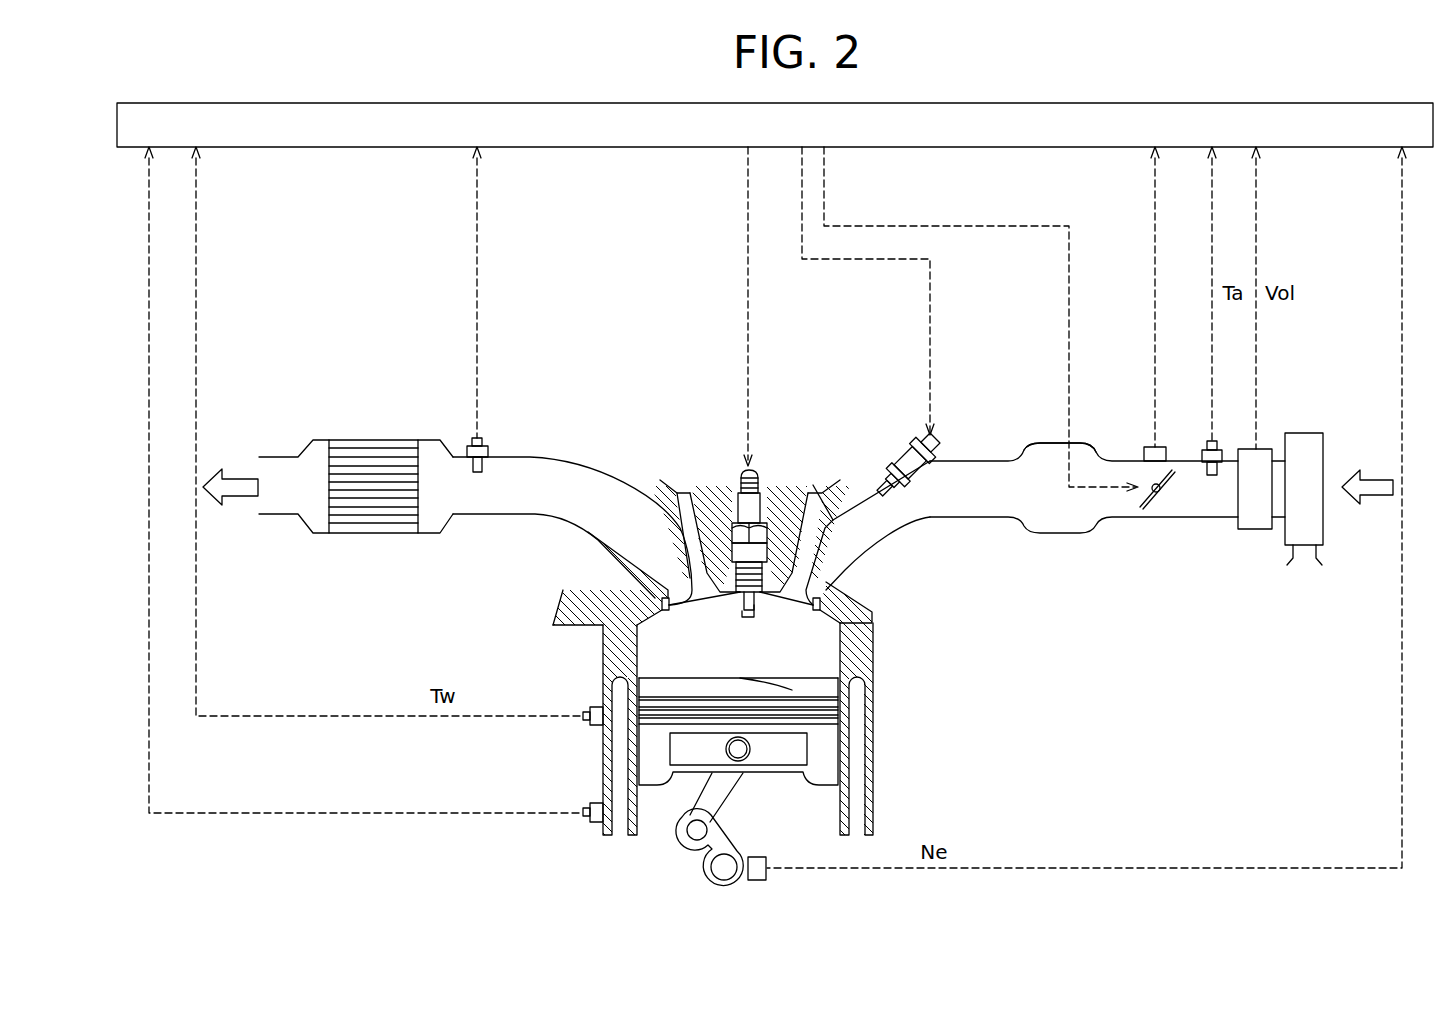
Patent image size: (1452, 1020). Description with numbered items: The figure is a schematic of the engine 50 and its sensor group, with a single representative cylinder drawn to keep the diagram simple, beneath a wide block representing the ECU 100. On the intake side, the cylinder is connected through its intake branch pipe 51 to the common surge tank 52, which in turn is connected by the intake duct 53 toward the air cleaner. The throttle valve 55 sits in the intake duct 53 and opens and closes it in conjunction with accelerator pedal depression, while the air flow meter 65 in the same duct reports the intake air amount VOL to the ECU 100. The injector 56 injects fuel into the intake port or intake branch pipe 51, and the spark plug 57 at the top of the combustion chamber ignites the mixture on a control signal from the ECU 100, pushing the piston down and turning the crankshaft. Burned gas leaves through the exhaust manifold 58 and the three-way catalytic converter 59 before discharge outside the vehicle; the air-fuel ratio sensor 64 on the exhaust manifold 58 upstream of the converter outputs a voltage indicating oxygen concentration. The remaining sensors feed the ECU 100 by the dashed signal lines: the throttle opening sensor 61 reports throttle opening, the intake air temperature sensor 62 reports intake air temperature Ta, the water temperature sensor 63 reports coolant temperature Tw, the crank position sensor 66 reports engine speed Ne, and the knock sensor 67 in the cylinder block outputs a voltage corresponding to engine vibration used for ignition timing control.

The ECU 100 is at (1256, 103).
The engine 50 is at (644, 895).
The intake branch pipe 51 is at (927, 519).
The surge tank 52 is at (1045, 443).
The intake duct 53 is at (1183, 518).
The throttle valve 55 is at (1304, 433).
The injector 56 is at (942, 437).
The spark plug 57 is at (756, 469).
The exhaust manifold 58 is at (566, 468).
The three-way catalytic converter 59 is at (373, 440).
The throttle opening sensor 61 is at (1153, 446).
The intake air temperature sensor 62 is at (1217, 441).
The water temperature sensor 63 is at (602, 706).
The air-fuel ratio sensor 64 is at (472, 443).
The air flow meter 65 is at (1255, 531).
The crank position sensor 66 is at (764, 882).
The knock sensor 67 is at (602, 802).